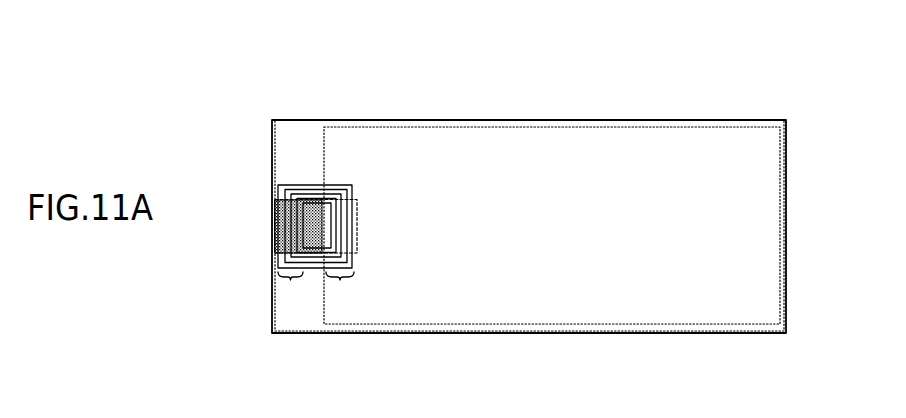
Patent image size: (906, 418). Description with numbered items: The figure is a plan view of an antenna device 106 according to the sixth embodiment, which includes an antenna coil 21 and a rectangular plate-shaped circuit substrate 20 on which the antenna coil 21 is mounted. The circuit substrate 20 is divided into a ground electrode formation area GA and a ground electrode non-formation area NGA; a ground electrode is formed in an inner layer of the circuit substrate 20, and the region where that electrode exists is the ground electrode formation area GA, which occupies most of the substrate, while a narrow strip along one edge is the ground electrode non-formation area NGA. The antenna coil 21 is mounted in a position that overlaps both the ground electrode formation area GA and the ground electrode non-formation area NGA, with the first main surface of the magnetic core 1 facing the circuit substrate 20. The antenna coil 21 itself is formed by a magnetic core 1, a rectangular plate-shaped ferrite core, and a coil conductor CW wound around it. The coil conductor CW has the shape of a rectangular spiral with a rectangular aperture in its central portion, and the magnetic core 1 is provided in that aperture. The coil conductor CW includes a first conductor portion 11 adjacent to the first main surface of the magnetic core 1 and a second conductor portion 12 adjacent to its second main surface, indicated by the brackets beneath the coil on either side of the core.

The antenna device 106 is at (756, 42).
The circuit substrate 20 is at (785, 120).
The antenna coil 21 is at (265, 183).
The ground electrode formation area GA is at (561, 152).
The ground electrode non-formation area NGA is at (290, 134).
The coil conductor CW is at (318, 185).
The magnetic core 1 is at (282, 232).
The first conductor portion 11 is at (290, 289).
The second conductor portion 12 is at (340, 289).